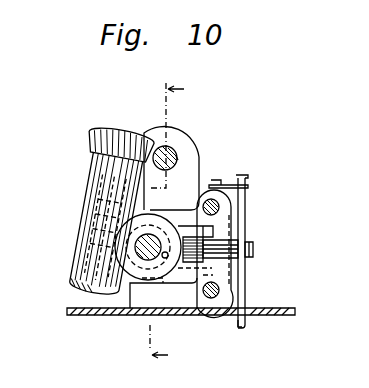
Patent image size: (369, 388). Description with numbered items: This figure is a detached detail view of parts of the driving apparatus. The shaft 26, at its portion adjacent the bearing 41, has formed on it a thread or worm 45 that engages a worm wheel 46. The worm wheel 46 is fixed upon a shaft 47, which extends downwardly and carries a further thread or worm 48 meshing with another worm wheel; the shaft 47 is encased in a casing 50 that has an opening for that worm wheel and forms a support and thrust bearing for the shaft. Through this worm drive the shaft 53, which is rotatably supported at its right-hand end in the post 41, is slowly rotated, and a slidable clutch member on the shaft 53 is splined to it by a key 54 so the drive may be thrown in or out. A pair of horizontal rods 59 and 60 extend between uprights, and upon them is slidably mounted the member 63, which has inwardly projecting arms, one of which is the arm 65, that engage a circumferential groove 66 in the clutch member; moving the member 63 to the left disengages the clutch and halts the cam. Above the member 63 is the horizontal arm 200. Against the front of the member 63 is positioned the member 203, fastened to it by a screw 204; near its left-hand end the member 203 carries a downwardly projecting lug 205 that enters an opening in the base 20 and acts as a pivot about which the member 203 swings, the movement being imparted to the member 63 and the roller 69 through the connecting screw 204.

The base 20 is at (283, 310).
The shaft 26 is at (178, 160).
The bearing 41 is at (196, 170).
The worm 45 is at (176, 151).
The worm wheel 46 is at (92, 142).
The shaft 47 is at (98, 207).
The worm 48 is at (76, 233).
The casing 50 is at (106, 172).
The shaft 53 is at (135, 246).
The key 54 is at (167, 258).
The horizontal rod 59 is at (219, 207).
The horizontal rod 60 is at (219, 293).
The slidable member 63 is at (233, 219).
The inwardly projecting arm 65 is at (182, 281).
The circumferential groove 66 is at (241, 277).
The roller 69 is at (236, 243).
The horizontal arm 200 is at (249, 186).
The member 203 is at (246, 290).
The screw 204 is at (255, 250).
The lug 205 is at (246, 325).